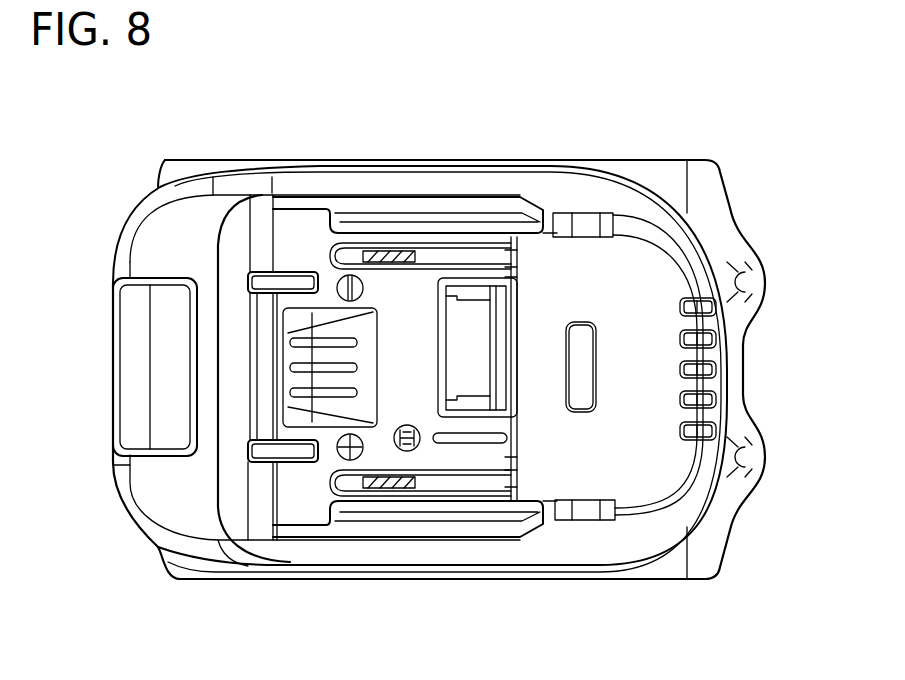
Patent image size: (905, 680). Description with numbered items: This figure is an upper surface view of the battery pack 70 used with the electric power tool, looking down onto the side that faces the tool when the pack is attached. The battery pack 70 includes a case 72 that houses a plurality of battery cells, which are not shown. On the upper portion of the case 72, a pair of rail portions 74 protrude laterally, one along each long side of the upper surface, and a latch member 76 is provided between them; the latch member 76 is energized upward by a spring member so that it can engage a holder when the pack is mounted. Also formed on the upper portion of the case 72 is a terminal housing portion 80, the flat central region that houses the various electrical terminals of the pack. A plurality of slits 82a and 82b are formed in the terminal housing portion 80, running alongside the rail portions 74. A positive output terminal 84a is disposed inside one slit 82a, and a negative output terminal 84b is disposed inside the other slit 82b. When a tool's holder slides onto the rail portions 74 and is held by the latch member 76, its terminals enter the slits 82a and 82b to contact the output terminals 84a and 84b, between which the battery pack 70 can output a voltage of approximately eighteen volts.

The battery pack 70 is at (765, 84).
The case 72 is at (730, 197).
The rail portions 74 is at (373, 197).
The latch member 76 is at (262, 345).
The terminal housing portion 80 is at (408, 335).
The slit 82a is at (467, 494).
The slit 82b is at (483, 250).
The positive output terminal 84a is at (427, 489).
The negative output terminal 84b is at (437, 252).